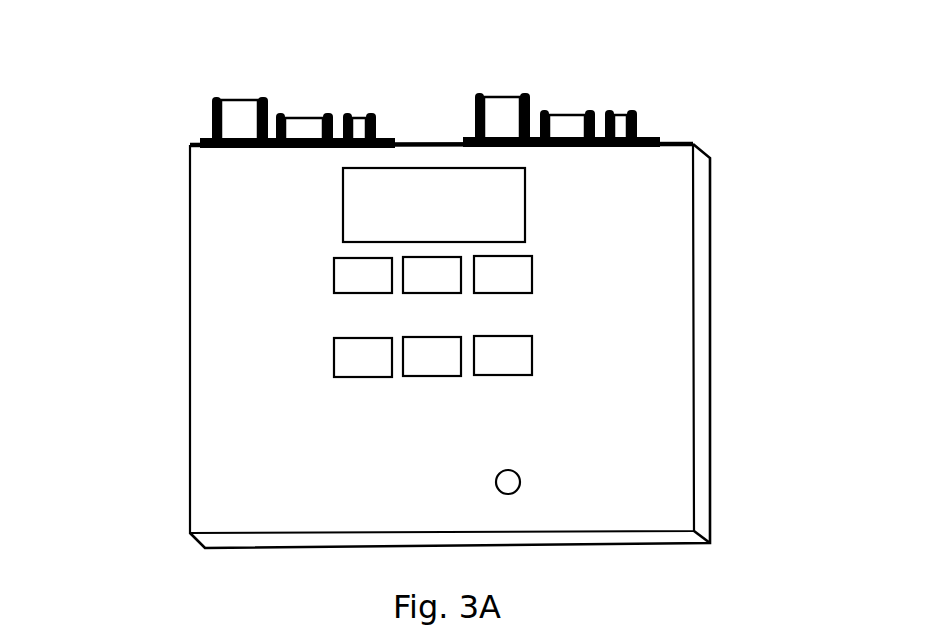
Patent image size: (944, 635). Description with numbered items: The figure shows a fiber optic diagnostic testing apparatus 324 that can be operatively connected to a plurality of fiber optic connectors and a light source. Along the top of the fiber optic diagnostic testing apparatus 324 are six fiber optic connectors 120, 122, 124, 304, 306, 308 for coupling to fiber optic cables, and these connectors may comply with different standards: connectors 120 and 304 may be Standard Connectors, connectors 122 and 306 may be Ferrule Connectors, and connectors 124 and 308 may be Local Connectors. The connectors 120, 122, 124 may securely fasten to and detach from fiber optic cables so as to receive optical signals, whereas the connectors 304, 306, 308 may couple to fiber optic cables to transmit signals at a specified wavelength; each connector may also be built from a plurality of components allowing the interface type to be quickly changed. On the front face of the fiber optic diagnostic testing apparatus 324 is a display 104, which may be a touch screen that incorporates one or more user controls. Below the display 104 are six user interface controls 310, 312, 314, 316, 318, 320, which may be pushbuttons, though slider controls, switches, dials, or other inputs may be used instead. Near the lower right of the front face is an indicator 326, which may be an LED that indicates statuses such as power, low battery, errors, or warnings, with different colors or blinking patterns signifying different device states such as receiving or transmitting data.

The display 104 is at (345, 207).
The fiber optic connector 120 is at (240, 99).
The fiber optic connector 122 is at (308, 117).
The fiber optic connector 124 is at (360, 117).
The fiber optic connector 304 is at (497, 96).
The fiber optic connector 306 is at (565, 114).
The fiber optic connector 308 is at (613, 114).
The user interface control 310 is at (363, 275).
The user interface control 312 is at (432, 275).
The user interface control 314 is at (503, 274).
The user interface control 316 is at (363, 357).
The user interface control 318 is at (432, 356).
The user interface control 320 is at (503, 355).
The fiber optic diagnostic testing apparatus 324 is at (190, 370).
The indicator 326 is at (518, 474).